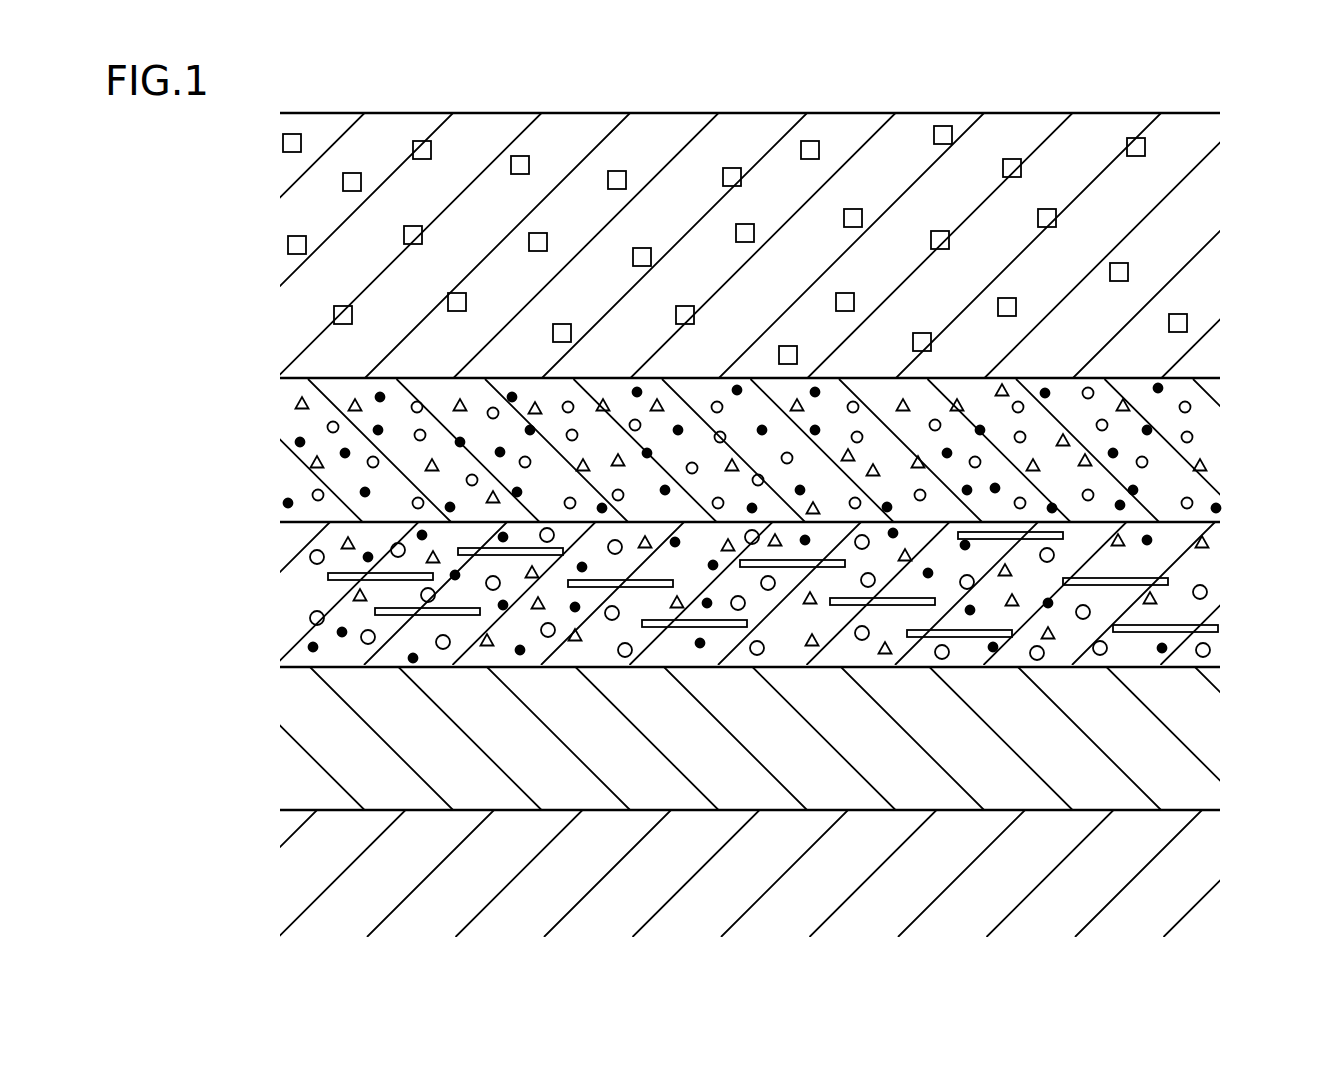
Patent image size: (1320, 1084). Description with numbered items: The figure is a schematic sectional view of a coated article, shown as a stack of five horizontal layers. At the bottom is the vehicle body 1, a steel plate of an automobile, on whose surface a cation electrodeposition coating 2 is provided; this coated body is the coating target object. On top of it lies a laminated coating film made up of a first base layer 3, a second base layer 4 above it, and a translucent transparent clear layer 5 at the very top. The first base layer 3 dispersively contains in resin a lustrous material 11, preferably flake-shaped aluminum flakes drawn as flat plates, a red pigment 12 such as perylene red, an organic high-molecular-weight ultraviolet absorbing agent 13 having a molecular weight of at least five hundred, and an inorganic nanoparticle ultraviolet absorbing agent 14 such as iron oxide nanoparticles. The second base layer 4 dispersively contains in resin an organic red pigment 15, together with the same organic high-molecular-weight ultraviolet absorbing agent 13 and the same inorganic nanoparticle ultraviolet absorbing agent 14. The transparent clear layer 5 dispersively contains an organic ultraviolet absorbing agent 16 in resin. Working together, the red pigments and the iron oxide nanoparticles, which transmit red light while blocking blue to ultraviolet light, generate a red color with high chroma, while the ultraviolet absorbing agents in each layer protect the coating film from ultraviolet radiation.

The vehicle body 1 is at (1200, 873).
The cation electrodeposition coating 2 is at (1200, 720).
The first base layer 3 is at (1198, 562).
The second base layer 4 is at (1200, 488).
The transparent clear layer 5 is at (1200, 217).
The lustrous material 11 is at (337, 581).
The red pigment 12 is at (369, 645).
The organic high-molecular-weight ultraviolet absorbing agent 13 is at (295, 403).
The inorganic nanoparticle ultraviolet absorbing agent 14 is at (1162, 388).
The organic red pigment 15 is at (1191, 408).
The organic ultraviolet absorbing agent 16 is at (433, 147).